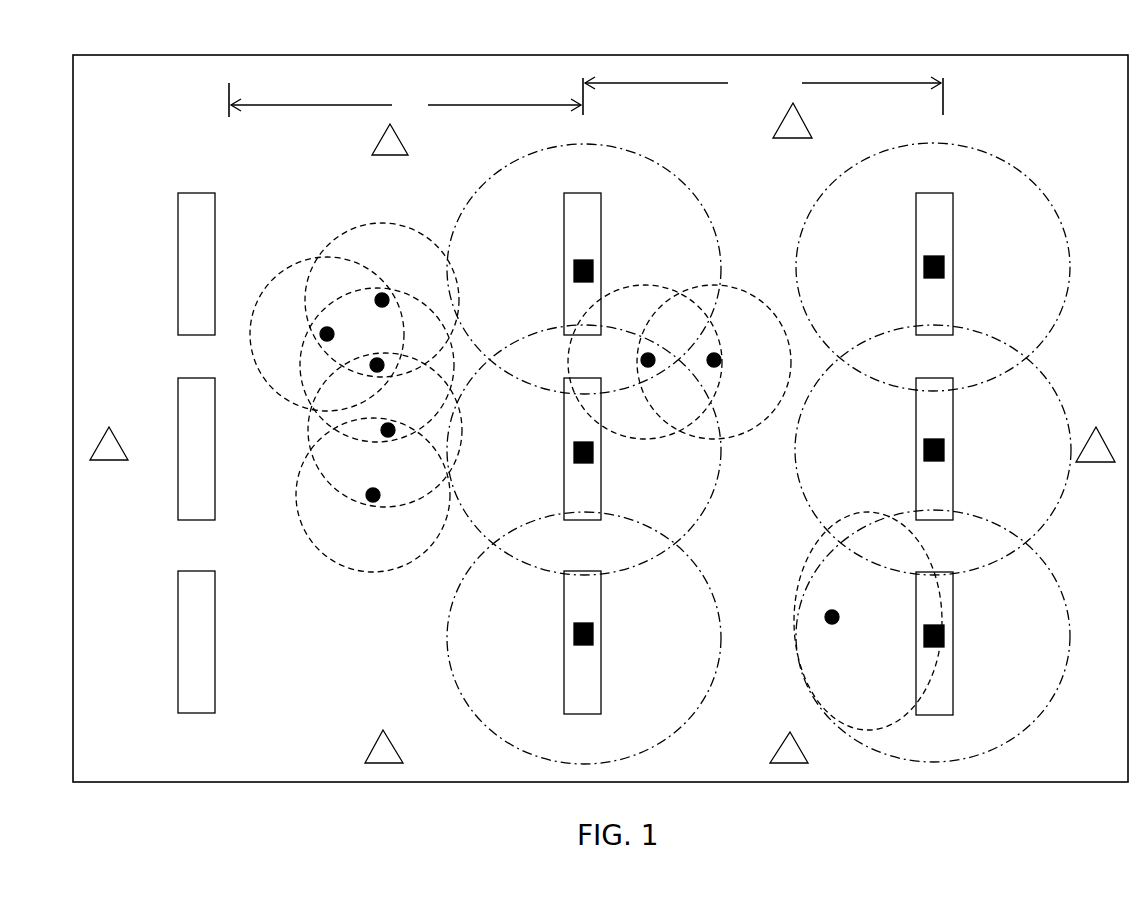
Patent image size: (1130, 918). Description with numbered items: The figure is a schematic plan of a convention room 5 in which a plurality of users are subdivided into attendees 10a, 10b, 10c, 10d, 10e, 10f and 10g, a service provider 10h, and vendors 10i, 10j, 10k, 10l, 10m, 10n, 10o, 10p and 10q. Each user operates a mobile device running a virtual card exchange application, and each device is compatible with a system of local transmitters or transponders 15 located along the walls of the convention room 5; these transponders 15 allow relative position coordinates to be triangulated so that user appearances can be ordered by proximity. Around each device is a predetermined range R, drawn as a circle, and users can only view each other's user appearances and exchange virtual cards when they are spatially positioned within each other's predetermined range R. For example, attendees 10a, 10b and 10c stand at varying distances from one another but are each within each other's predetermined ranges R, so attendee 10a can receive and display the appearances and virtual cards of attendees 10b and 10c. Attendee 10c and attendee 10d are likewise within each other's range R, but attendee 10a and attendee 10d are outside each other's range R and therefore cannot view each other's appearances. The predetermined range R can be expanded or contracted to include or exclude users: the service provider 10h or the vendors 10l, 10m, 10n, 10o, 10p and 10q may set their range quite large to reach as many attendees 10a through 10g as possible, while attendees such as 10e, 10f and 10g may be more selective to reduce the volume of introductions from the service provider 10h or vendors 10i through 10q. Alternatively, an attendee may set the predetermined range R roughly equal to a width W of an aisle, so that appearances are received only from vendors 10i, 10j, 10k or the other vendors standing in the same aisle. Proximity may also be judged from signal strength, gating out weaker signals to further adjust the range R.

The convention room 5 is at (66, 27).
The local transmitters 15 is at (372, 143).
The attendee 10a is at (380, 307).
The attendee 10b is at (321, 338).
The attendee 10c is at (380, 372).
The attendee 10d is at (387, 437).
The attendee 10e is at (373, 502).
The attendee 10f is at (651, 353).
The attendee 10g is at (717, 367).
The service provider 10h is at (832, 624).
The vendor 10i is at (211, 222).
The vendor 10j is at (211, 456).
The vendor 10k is at (213, 649).
The vendor 10l is at (597, 222).
The vendor 10m is at (600, 499).
The vendor 10n is at (599, 694).
The vendor 10o is at (951, 222).
The vendor 10p is at (951, 499).
The vendor 10q is at (951, 696).
The predetermined range R is at (378, 222).
The width of an isle W is at (586, 95).